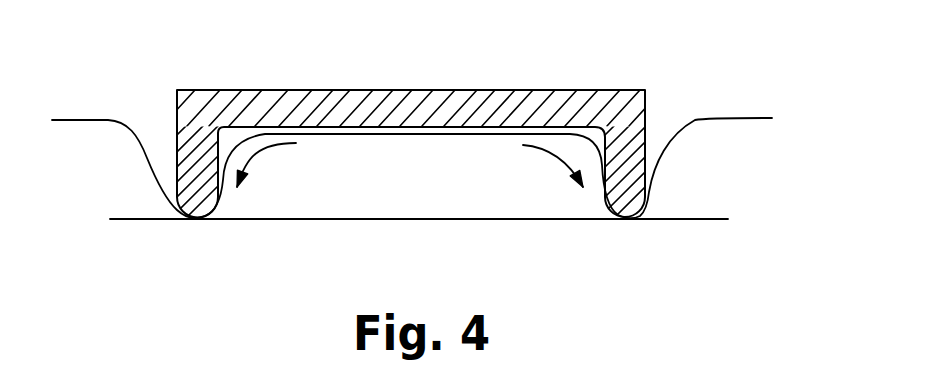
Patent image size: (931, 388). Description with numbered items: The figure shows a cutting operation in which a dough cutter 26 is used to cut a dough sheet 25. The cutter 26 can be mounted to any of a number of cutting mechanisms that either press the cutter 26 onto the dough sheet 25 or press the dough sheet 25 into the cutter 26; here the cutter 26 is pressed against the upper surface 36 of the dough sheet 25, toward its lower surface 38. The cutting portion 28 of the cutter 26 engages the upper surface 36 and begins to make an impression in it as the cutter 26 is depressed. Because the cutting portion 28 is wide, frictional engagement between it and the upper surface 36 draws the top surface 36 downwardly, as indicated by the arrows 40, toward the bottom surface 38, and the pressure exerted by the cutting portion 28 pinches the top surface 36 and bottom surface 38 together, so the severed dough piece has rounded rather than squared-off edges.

The dough sheet 25 is at (768, 167).
The dough cutter 26 is at (518, 90).
The cutting portion 28 is at (653, 158).
The upper surface 36 is at (377, 135).
The lower surface 38 is at (493, 221).
The arrows 40 is at (268, 147).